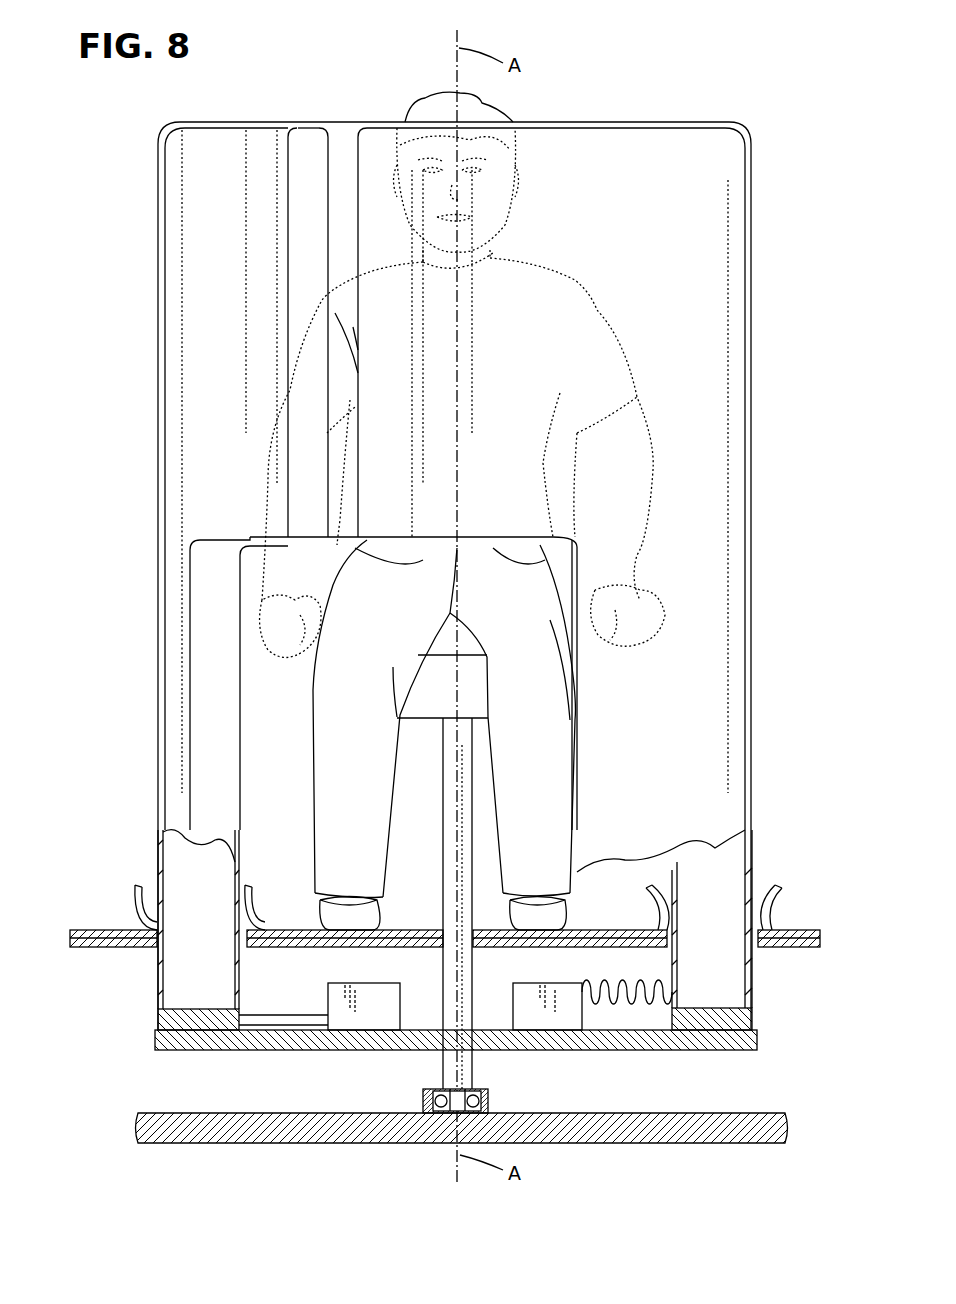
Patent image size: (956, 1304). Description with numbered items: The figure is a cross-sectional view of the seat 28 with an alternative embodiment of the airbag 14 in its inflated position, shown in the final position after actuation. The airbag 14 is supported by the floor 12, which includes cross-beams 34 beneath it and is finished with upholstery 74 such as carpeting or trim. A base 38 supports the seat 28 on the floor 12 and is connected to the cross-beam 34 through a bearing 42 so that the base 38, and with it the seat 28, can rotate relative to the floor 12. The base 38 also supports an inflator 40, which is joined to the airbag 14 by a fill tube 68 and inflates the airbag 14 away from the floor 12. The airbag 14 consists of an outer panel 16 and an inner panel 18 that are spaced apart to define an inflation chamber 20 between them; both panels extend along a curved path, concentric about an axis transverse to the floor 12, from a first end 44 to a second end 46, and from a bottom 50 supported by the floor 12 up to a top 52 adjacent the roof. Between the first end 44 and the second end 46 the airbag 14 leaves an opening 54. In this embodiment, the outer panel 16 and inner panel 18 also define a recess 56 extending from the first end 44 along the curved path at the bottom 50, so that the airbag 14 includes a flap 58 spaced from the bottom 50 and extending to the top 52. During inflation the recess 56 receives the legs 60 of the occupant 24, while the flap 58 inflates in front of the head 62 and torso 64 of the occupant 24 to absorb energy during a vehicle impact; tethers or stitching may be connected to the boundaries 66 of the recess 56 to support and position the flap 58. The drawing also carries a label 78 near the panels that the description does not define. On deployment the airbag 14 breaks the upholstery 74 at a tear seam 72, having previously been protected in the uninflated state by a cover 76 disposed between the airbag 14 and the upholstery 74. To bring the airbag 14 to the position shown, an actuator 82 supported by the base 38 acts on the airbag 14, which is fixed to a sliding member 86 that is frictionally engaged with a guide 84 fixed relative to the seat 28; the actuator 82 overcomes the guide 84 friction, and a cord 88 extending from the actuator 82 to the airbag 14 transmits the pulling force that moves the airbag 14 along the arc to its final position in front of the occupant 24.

The floor 12 is at (90, 932).
The airbag 14 is at (150, 245).
The outer panel 16 is at (753, 373).
The inner panel 18 is at (374, 140).
The inflation chamber 20 is at (202, 893).
The occupant 24 is at (355, 216).
The seat 28 is at (277, 708).
The cross-beams 34 is at (185, 1113).
The base 38 is at (310, 1050).
The inflator 40 is at (597, 1010).
The bearing 42 is at (493, 1103).
The first end 44 is at (302, 491).
The second end 46 is at (398, 503).
The bottom 50 is at (768, 977).
The top 52 is at (559, 114).
The opening 54 is at (283, 767).
The recess 56 is at (285, 668).
The flap 58 is at (432, 441).
The legs 60 is at (537, 763).
The head 62 is at (497, 118).
The torso 64 is at (347, 307).
The boundaries 66 is at (213, 712).
The fill tubes 68 is at (630, 1005).
The tear seam 72 is at (137, 889).
The upholstery 74 is at (618, 930).
The cover 76 is at (535, 947).
The middle panel 78 is at (351, 152).
The actuator 82 is at (327, 993).
The guide 84 is at (138, 1020).
The sliding member 86 is at (158, 1021).
The cord 88 is at (285, 1013).